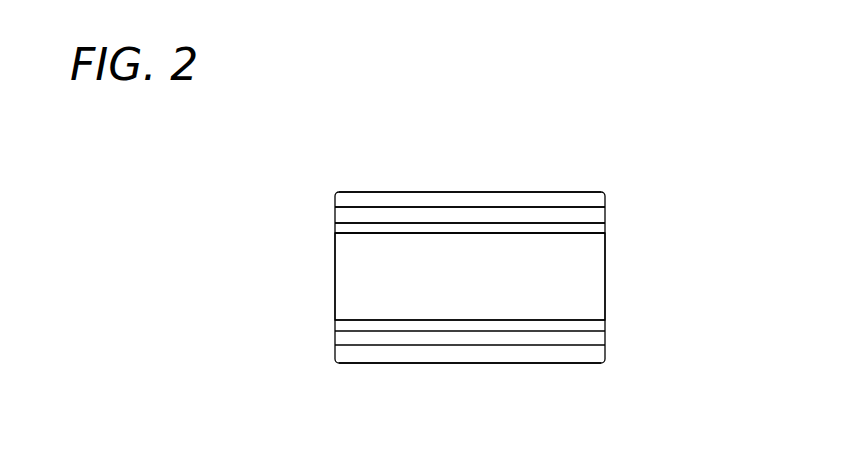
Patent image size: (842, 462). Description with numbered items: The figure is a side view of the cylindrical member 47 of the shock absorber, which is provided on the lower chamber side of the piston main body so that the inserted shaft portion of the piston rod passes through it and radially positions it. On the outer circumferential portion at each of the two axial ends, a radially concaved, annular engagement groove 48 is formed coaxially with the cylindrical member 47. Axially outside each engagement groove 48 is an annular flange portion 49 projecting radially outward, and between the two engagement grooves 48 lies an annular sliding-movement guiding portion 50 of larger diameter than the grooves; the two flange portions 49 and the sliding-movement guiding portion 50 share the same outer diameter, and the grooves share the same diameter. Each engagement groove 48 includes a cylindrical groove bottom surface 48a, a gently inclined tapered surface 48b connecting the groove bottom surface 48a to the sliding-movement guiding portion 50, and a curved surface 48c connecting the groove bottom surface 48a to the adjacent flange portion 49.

The cylindrical member 47 is at (627, 205).
The engagement groove 48 is at (605, 215).
The groove bottom surface 48a is at (335, 219).
The tapered surface 48b is at (335, 232).
The curved surface 48c is at (335, 212).
The flange portion 49 is at (608, 203).
The sliding-movement guiding portion 50 is at (608, 272).